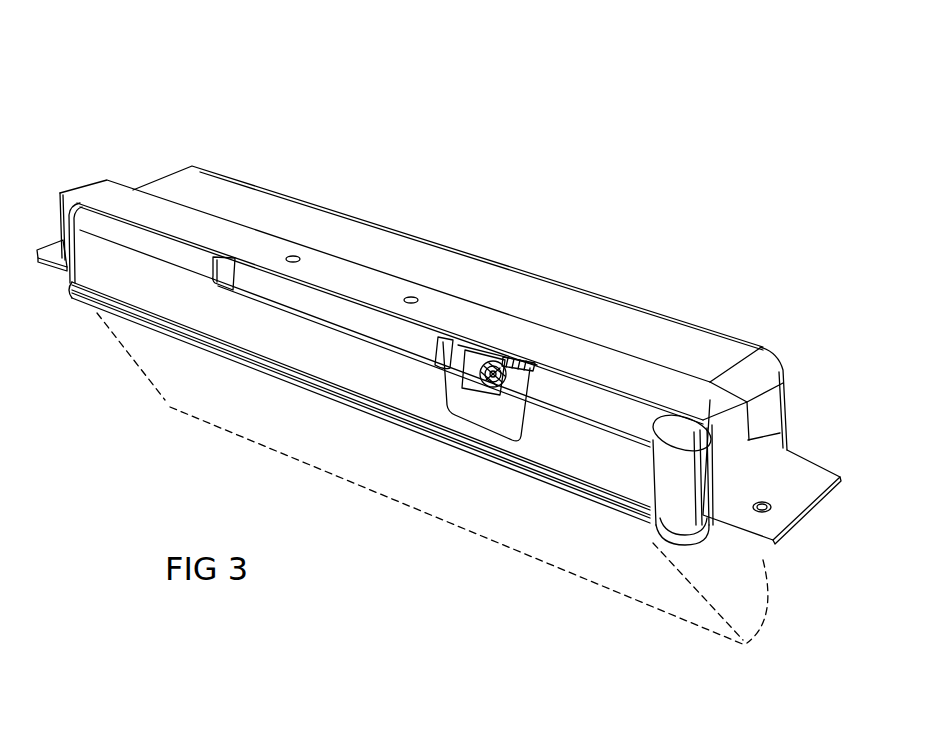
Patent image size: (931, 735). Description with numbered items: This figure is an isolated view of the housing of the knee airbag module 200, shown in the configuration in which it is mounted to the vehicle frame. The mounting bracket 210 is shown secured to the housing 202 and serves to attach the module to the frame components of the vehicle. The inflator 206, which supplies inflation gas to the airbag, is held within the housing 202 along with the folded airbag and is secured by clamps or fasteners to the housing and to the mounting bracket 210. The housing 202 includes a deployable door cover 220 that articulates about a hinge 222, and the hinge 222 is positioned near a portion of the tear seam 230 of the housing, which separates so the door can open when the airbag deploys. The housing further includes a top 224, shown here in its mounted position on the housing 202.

The knee airbag module 200 is at (287, 152).
The housing 202 is at (98, 178).
The inflator 206 is at (497, 350).
The mounting bracket 210 is at (57, 207).
The door cover 220 is at (213, 385).
The hinge 222 is at (527, 487).
The top 224 is at (347, 238).
The tear seam 230 is at (653, 540).